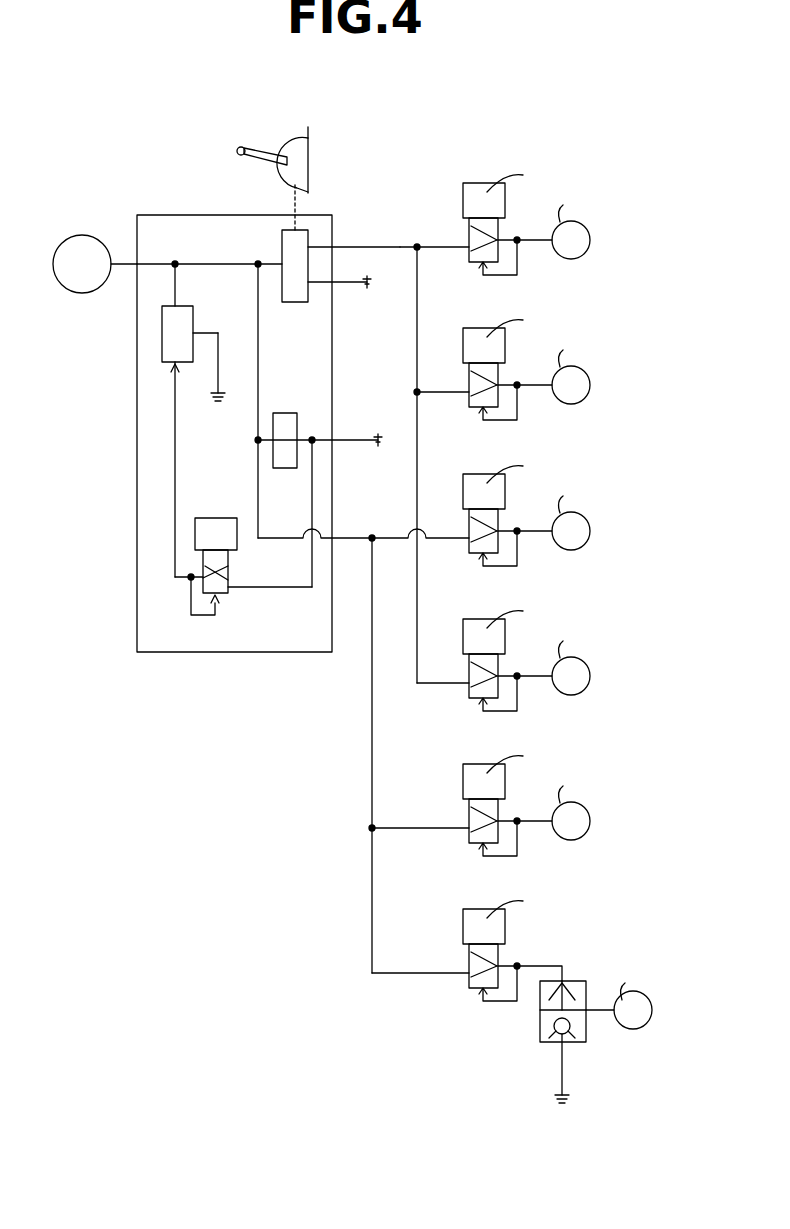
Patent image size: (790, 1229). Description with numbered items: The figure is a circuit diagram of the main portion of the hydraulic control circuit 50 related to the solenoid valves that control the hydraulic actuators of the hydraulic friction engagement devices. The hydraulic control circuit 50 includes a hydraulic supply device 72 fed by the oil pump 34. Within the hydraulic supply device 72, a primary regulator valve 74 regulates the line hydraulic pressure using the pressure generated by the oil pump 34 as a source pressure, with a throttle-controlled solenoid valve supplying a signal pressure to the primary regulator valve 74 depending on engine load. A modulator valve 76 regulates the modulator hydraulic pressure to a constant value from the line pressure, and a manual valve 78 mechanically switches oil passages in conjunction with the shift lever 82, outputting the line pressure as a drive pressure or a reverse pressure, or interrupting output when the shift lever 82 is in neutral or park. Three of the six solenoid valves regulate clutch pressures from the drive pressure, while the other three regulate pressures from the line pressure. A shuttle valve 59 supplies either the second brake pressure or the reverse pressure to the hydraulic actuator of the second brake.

The hydraulic control circuit 50 is at (478, 122).
The oil pump 34 is at (85, 240).
The hydraulic supply device 72 is at (253, 223).
The primary regulator valve 74 is at (188, 318).
The modulator valve 76 is at (293, 422).
The manual valve 78 is at (295, 303).
The shift lever 82 is at (253, 148).
The shuttle valve 59 is at (571, 980).